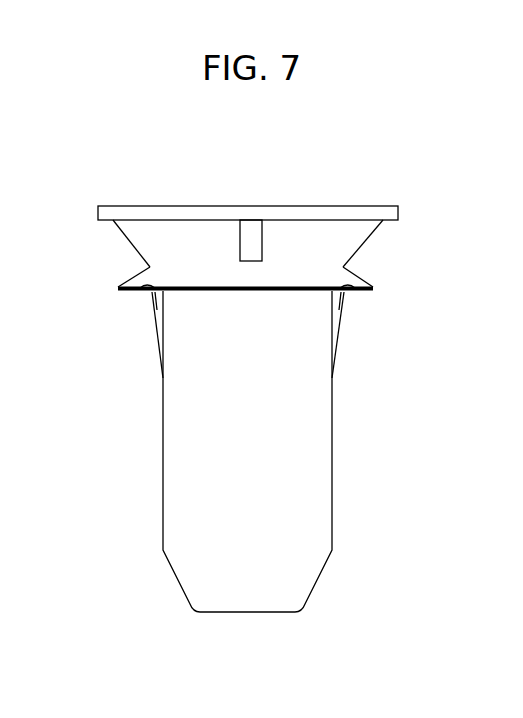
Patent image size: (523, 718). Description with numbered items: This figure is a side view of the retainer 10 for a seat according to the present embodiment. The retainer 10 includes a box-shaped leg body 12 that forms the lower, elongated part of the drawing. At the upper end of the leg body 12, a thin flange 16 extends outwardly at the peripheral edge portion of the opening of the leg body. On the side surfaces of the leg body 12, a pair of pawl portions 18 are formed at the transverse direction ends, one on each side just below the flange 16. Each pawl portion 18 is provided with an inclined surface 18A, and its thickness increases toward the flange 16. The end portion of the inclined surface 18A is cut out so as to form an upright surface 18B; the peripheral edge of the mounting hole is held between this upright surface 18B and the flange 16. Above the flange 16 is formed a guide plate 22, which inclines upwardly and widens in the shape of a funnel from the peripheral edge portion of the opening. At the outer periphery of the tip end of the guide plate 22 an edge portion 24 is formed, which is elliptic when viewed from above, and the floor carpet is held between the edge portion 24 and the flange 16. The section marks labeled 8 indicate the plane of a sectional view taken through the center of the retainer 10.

The section line 8- 8 is at (250, 197).
The retainer for seat 10 is at (413, 186).
The leg body 12 is at (333, 452).
The flange 16 is at (353, 276).
The pawl portion 18 is at (147, 328).
The inclined surface 18A is at (150, 302).
The upright surface 18B is at (140, 288).
The guide plate 22 is at (132, 228).
The edge portion 24 is at (98, 213).